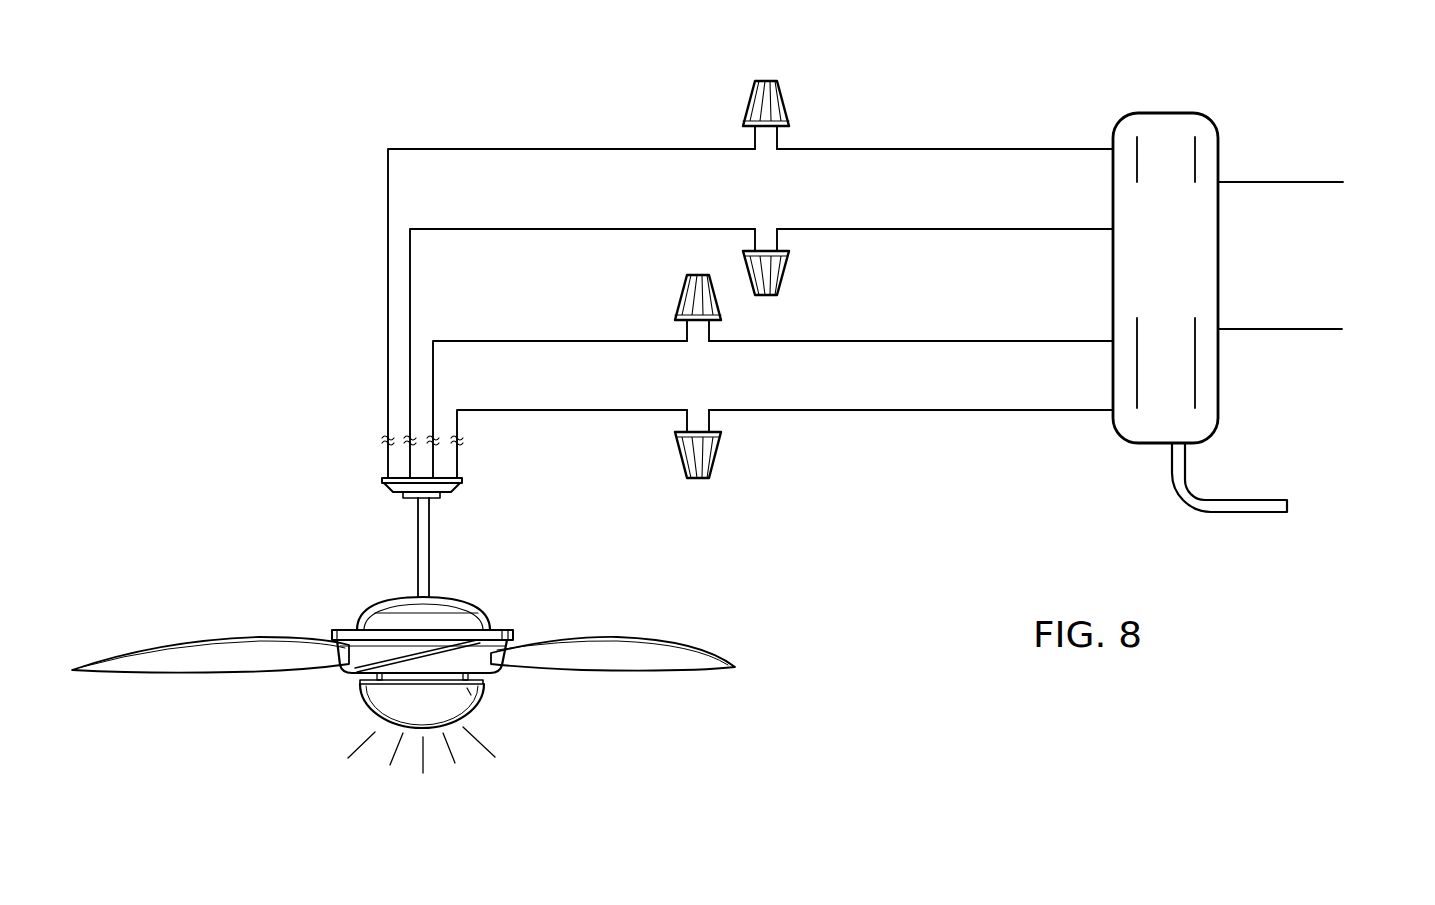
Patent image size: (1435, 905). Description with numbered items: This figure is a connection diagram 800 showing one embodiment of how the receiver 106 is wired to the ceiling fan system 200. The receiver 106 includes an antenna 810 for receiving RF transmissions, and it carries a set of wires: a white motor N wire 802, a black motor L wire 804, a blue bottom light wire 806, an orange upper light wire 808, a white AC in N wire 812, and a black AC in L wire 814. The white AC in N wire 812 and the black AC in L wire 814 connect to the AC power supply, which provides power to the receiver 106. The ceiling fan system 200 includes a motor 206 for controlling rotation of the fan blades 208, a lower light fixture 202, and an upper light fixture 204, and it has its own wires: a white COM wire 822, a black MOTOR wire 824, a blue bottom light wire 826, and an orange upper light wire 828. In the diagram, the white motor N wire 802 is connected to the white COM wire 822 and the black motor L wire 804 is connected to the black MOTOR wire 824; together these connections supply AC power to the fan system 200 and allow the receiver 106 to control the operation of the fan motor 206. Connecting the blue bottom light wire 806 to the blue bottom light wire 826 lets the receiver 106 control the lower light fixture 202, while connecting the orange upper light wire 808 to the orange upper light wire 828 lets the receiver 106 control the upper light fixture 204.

The connection diagram 800 is at (1058, 64).
The receiver 106 is at (1165, 112).
The white motor N wire 802 is at (1065, 150).
The black motor L wire 804 is at (1050, 230).
The blue bottom light wire 806 is at (1050, 343).
The orange upper light wire 808 is at (1060, 412).
The antenna 810 is at (1243, 513).
The white AC in N wire 812 is at (1283, 183).
The black AC in L wire 814 is at (1283, 332).
The white COM wire 822 is at (650, 148).
The black MOTOR wire 824 is at (650, 229).
The blue bottom light wire 826 is at (648, 340).
The orange upper light wire 828 is at (653, 409).
The ceiling fan system 200 is at (360, 547).
The lower light fixture 202 is at (363, 690).
The upper light fixture 204 is at (483, 609).
The motor 206 is at (348, 625).
The fan blades 208 is at (609, 635).